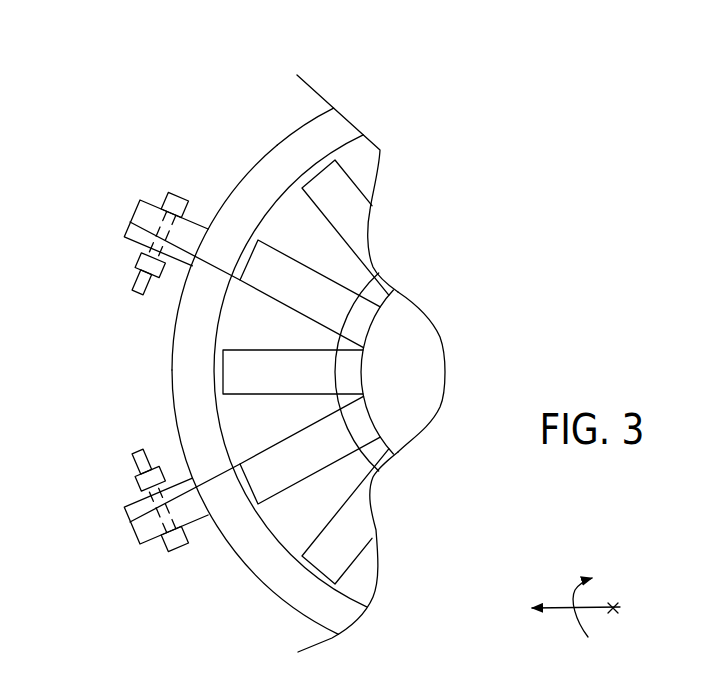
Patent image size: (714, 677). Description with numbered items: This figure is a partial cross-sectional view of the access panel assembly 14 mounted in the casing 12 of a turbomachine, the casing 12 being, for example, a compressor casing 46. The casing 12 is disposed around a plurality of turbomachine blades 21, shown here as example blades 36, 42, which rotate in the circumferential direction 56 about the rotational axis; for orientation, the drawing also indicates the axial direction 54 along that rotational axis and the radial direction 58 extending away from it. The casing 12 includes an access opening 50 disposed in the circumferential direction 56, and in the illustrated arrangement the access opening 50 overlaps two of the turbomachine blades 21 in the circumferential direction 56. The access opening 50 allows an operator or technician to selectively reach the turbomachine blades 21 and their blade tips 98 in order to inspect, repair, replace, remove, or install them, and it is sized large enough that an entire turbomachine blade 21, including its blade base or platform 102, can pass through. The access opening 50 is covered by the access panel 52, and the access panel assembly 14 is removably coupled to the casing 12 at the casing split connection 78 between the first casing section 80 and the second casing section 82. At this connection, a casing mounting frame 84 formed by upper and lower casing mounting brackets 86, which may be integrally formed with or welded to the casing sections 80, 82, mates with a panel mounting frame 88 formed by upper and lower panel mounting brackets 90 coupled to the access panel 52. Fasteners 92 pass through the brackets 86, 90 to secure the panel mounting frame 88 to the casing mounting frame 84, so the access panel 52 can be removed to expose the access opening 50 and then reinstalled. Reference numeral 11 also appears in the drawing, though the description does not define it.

The fan assembly 11 is at (437, 143).
The casing 12 is at (280, 140).
The access panel assembly 14 is at (122, 376).
The turbomachine blades 21 is at (305, 258).
The turbomachine blade 36 is at (332, 275).
The turbomachine blade 42 is at (347, 363).
The casing 46 is at (305, 122).
The access opening 50 is at (256, 287).
The access panel 52 is at (175, 393).
The axial direction 54 is at (615, 616).
The circumferential direction 56 is at (574, 598).
The radial direction 58 is at (563, 612).
The casing split connection 78 is at (108, 222).
The first casing section 80 is at (270, 152).
The second casing section 82 is at (282, 602).
The casing mounting frame 84 is at (160, 195).
The casing mounting brackets 86 is at (131, 214).
The panel mounting frame 88 is at (95, 235).
The panel mounting brackets 90 is at (123, 235).
The fasteners 92 is at (136, 293).
The blade tips 98 is at (255, 250).
The blade base or platform 102 is at (383, 286).